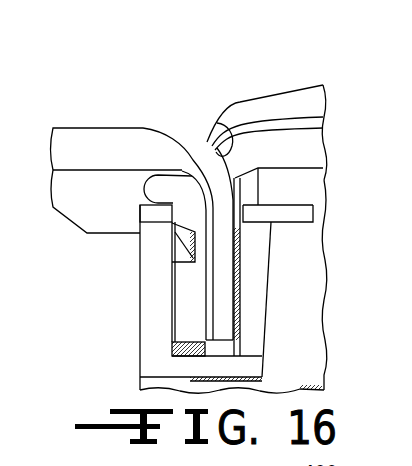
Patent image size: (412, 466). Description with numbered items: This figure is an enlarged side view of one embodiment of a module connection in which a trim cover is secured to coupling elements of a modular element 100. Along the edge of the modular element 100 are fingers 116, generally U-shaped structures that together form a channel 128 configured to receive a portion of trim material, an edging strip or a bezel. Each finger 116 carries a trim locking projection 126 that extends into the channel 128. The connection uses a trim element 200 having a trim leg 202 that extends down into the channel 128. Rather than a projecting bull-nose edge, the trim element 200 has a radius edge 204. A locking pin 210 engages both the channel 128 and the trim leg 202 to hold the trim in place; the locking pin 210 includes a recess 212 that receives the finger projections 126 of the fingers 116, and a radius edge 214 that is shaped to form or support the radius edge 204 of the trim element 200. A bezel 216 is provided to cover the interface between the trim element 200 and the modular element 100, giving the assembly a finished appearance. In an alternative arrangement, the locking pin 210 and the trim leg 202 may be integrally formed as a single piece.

The modular element 100 is at (306, 241).
The fingers 116 is at (152, 285).
The trim locking projections 126 is at (172, 247).
The channel 128 is at (216, 348).
The trim element 200 is at (80, 147).
The trim leg 202 is at (226, 285).
The radius edge 204 is at (218, 122).
The locking pin 210 is at (205, 312).
The recess 212 is at (182, 296).
The radius edge 214 is at (158, 158).
The bezel 216 is at (298, 96).